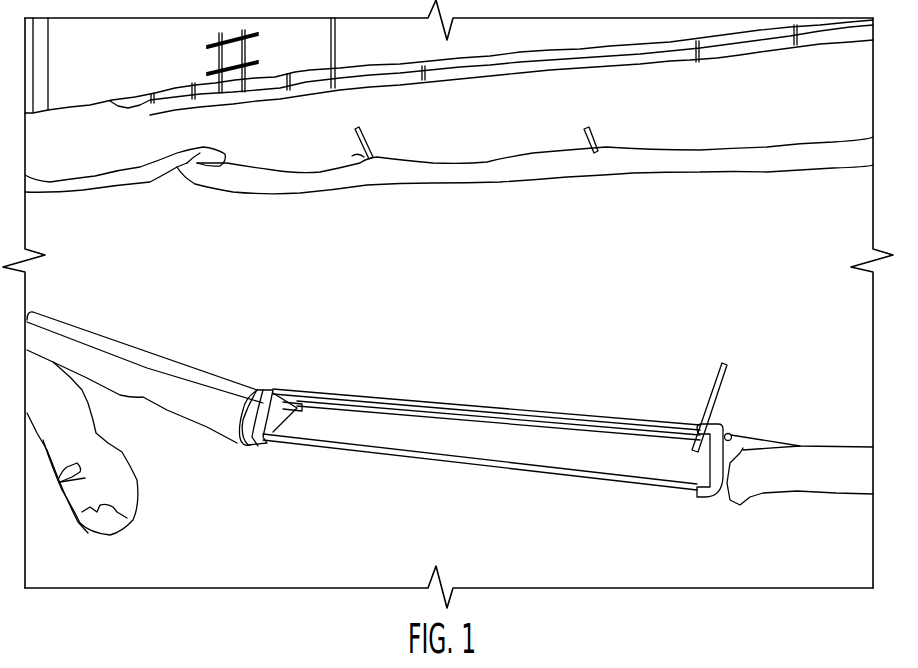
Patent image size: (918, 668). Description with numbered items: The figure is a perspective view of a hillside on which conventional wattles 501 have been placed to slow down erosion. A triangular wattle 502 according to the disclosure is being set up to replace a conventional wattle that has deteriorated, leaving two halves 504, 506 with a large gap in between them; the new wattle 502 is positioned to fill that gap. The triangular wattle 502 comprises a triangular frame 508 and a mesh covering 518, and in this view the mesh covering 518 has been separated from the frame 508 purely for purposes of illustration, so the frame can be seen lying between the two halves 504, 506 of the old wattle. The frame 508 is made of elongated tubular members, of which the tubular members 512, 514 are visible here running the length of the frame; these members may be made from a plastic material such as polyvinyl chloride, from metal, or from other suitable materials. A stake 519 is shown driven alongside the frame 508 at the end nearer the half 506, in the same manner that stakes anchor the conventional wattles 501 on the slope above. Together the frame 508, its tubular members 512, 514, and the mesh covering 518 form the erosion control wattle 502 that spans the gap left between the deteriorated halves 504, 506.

The background terrain 501 is at (545, 165).
The triangular wattle 502 is at (296, 344).
The half of deteriorated wattle 504 is at (82, 467).
The half of deteriorated wattle 506 is at (840, 463).
The triangular frame 508 is at (560, 410).
The tubular member 512 is at (397, 398).
The tubular member 514 is at (515, 466).
The mesh covering 518 is at (148, 368).
The stake 519 is at (640, 437).